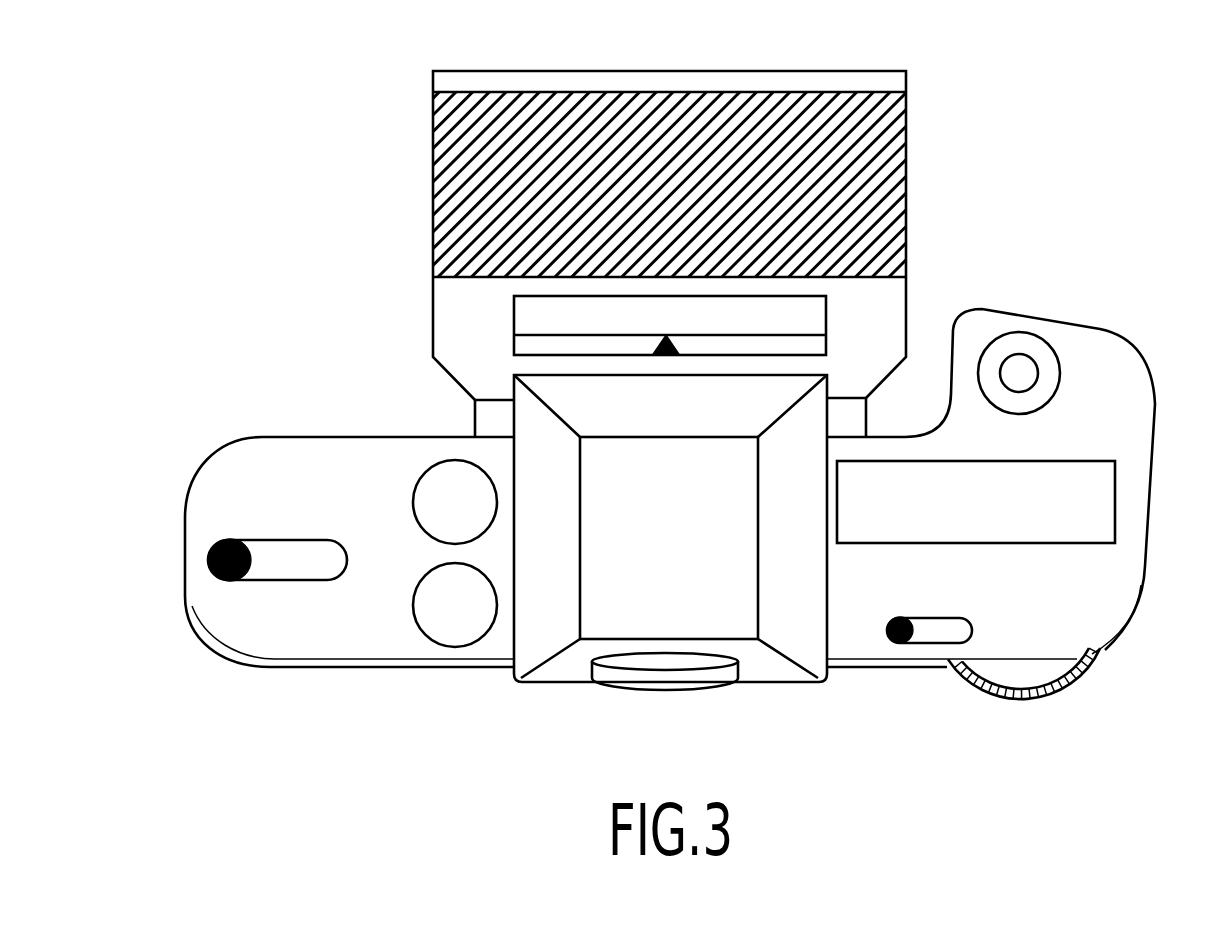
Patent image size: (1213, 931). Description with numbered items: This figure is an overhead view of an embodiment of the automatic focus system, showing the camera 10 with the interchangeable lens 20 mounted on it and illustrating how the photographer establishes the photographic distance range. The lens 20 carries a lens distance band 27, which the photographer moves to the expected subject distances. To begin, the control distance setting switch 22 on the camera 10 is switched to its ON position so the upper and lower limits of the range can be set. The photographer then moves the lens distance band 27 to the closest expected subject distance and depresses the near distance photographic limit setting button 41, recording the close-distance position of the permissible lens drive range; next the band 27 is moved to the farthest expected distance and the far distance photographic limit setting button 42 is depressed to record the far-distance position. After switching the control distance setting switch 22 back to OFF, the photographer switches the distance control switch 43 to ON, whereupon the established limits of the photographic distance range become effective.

The camera 10 is at (283, 437).
The interchangeable lens 20 is at (780, 71).
The lens distance band 27 is at (433, 128).
The control distance setting switch 22 is at (208, 560).
The near distance photographic limit setting button 41 is at (420, 482).
The far distance photographic limit setting button 42 is at (458, 647).
The distance control switch 43 is at (900, 643).